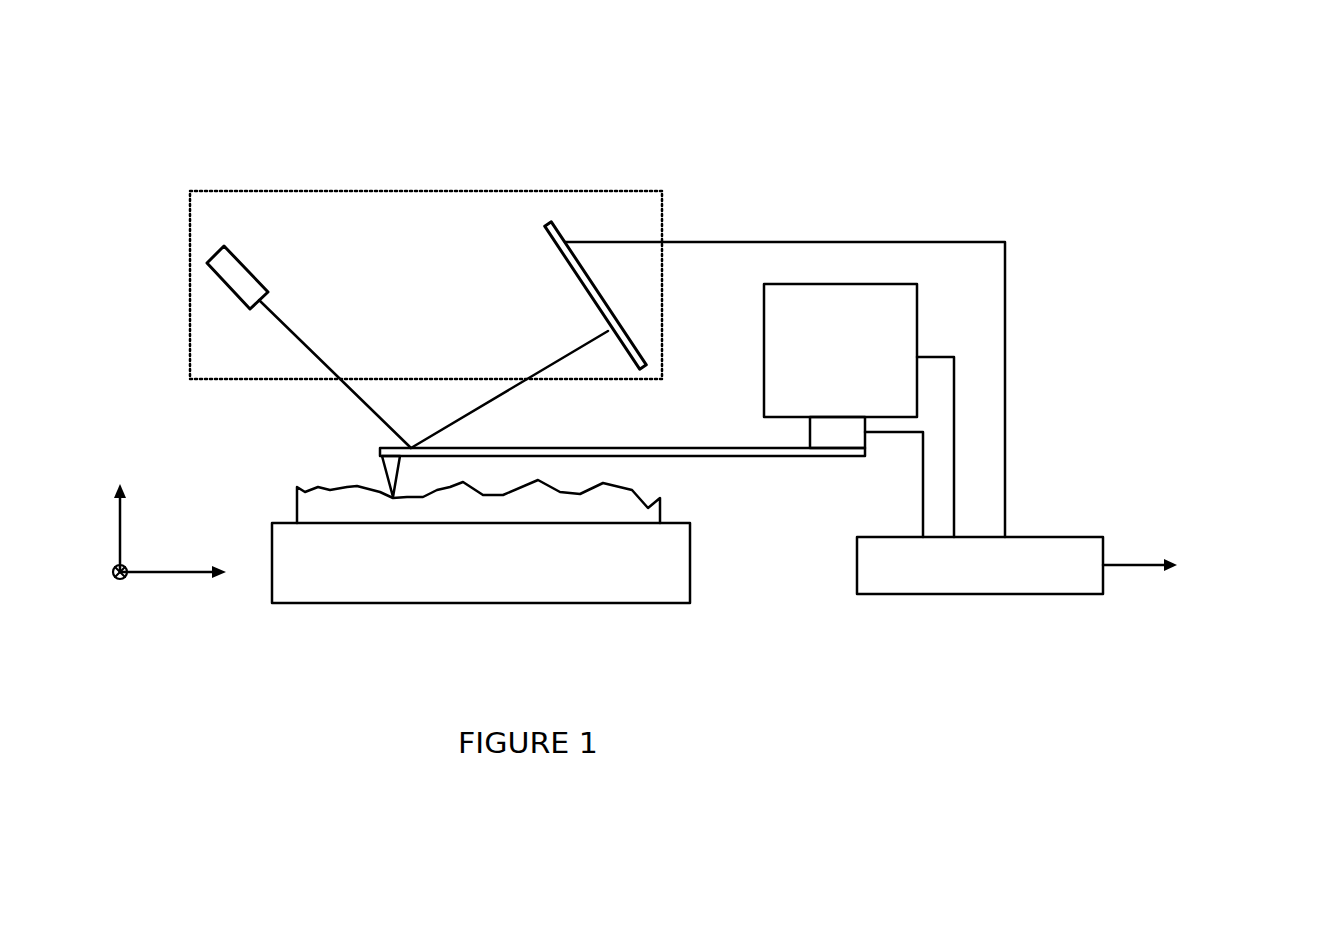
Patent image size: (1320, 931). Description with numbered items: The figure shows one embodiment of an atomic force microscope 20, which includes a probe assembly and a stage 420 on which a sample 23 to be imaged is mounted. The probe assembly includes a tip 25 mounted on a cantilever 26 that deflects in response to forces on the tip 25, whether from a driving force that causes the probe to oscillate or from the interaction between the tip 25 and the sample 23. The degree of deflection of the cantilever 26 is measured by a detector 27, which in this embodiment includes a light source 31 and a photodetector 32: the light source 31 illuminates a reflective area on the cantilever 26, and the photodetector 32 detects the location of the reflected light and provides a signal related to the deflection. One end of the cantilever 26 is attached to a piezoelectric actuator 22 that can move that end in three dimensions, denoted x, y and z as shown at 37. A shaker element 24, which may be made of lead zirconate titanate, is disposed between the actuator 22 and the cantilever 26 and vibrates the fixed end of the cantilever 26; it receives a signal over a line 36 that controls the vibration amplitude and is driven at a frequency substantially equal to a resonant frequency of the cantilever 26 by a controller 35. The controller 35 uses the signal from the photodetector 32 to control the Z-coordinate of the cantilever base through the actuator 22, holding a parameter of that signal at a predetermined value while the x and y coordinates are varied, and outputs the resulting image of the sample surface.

The microscope 20 is at (114, 144).
The detector 27 is at (190, 300).
The light source 31 is at (243, 267).
The photodetector 32 is at (587, 282).
The cantilever 26 is at (678, 452).
The tip 25 is at (388, 480).
The sample 23 is at (300, 507).
The stage 420 is at (333, 603).
The shaker element 24 is at (828, 442).
The piezoelectric actuator 22 is at (826, 408).
The line 36 is at (922, 480).
The controller 35 is at (1043, 594).
The x, y, and z coordinate directions 37 is at (160, 574).